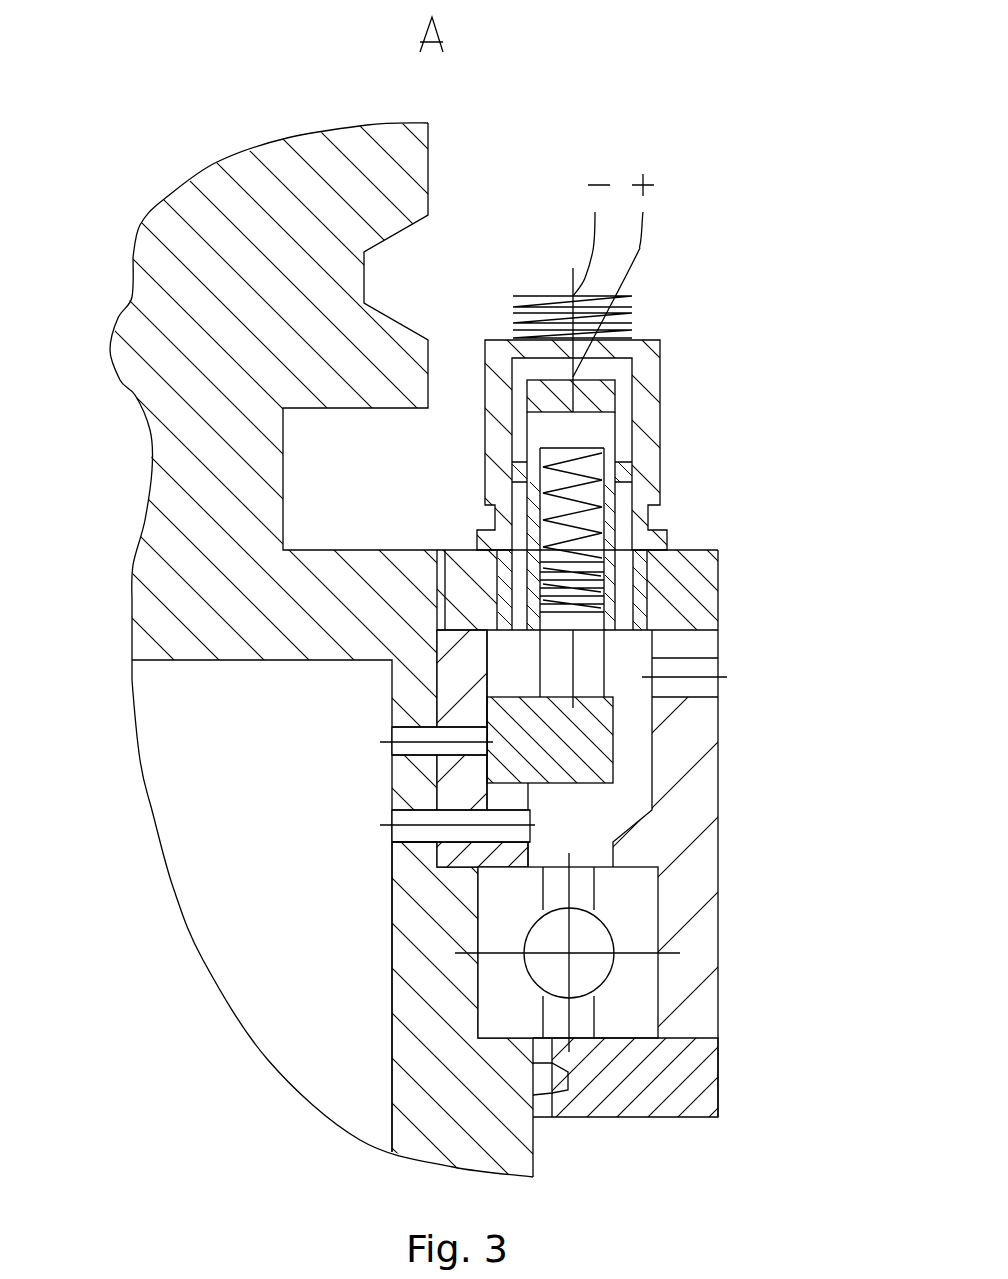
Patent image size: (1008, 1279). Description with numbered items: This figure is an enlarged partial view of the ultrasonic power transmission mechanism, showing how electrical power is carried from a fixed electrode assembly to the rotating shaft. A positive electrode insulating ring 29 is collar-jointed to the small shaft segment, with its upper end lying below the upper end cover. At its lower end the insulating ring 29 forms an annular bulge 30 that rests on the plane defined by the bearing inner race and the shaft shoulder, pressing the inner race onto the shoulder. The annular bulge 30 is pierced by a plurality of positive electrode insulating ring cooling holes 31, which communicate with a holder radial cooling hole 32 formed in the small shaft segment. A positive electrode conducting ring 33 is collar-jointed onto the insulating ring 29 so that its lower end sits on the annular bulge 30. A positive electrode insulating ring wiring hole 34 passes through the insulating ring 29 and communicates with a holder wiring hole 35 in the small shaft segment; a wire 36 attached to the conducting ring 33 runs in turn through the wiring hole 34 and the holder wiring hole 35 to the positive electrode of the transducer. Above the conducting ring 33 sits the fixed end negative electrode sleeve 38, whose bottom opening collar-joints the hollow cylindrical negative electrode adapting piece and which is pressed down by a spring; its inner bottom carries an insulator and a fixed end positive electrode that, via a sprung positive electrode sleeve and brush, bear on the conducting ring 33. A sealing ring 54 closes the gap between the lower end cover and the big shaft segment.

The positive electrode insulating ring 29 is at (460, 692).
The annular bulge 30 is at (507, 855).
The positive electrode insulating ring cooling holes 31 is at (510, 820).
The holder radial cooling hole 32 is at (407, 835).
The positive electrode conducting ring 33 is at (580, 742).
The positive electrode insulating ring wiring hole 34 is at (463, 733).
The holder wiring hole 35 is at (410, 755).
The wire 36 is at (393, 742).
The fixed end negative electrode sleeve 38 is at (657, 383).
The sealing ring 54 is at (568, 1080).